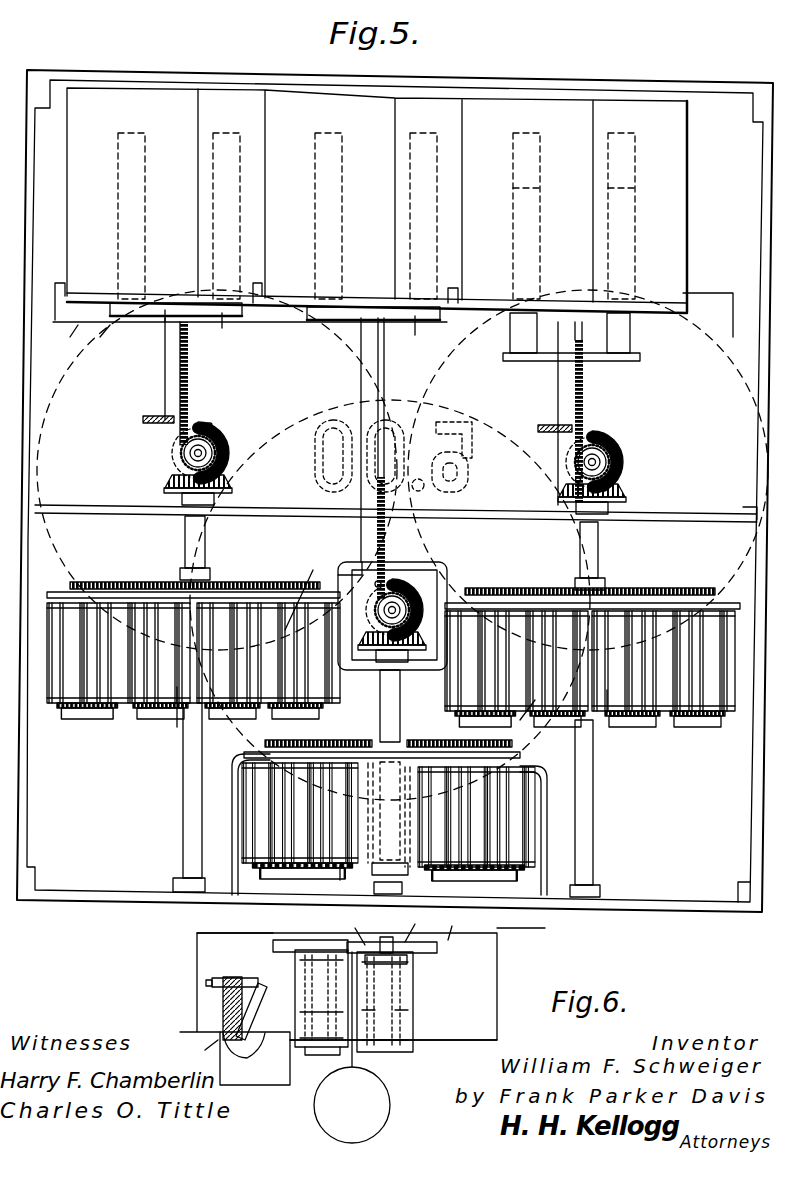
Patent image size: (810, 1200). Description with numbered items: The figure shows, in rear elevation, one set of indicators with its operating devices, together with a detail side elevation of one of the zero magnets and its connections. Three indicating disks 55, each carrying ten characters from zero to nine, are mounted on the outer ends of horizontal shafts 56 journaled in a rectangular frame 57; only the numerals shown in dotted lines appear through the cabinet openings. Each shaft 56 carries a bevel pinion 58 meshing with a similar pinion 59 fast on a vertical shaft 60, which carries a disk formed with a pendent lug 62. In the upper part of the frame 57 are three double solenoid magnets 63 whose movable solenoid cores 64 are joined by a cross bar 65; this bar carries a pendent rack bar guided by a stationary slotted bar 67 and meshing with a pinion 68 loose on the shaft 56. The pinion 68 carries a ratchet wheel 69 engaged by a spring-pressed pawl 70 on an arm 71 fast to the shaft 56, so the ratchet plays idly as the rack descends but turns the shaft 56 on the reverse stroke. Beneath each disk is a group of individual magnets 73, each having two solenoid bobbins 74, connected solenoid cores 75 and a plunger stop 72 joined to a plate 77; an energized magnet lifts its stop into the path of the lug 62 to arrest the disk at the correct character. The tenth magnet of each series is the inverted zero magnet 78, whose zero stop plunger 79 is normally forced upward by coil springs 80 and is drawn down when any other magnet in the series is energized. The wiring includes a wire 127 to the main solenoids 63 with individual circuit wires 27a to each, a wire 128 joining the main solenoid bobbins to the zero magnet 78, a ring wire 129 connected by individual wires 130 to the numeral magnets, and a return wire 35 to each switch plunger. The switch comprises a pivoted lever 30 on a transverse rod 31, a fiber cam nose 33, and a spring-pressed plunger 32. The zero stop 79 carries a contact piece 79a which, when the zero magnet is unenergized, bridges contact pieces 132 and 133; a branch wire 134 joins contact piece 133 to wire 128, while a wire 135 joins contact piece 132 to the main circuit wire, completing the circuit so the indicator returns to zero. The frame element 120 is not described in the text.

In FIG. 5, the individual circuit wire 27a is at (62, 292).
In FIG. 5, the indicating disk 55 is at (322, 407).
In FIG. 5, the horizontal shaft 56 is at (195, 458).
In FIG. 5, the rectangular frame 57 is at (767, 179).
In FIG. 5, the bevel pinion 58 is at (226, 450).
In FIG. 5, the bevel pinion 59 is at (230, 487).
In FIG. 5, the vertical shaft 60 is at (165, 352).
In FIG. 5, the pendent lug 62 is at (293, 583).
In FIG. 5, the double solenoid magnet 63 is at (377, 200).
In FIG. 5, the movable solenoid core 64 is at (213, 197).
In FIG. 5, the cross bar 65 is at (650, 358).
In FIG. 5, the stationary slotted bar 67 is at (143, 421).
In FIG. 5, the pinion 68 is at (190, 453).
In FIG. 5, the ratchet wheel 69 is at (225, 462).
In FIG. 5, the spring-pressed pawl 70 is at (207, 422).
In FIG. 5, the arm 71 is at (224, 438).
In FIG. 5, the plunger stop 72 is at (512, 602).
In FIG. 6, the plunger stop 72 is at (322, 945).
In FIG. 5, the individual magnet 73 is at (125, 622).
In FIG. 6, the individual magnet 73 is at (305, 950).
In FIG. 5, the solenoid bobbin 74 is at (177, 727).
In FIG. 5, the solenoid core 75 is at (108, 718).
In FIG. 6, the solenoid core 75 is at (330, 1012).
In FIG. 5, the plate 77 is at (158, 719).
In FIG. 5, the zero stop plunger 79 is at (408, 657).
In FIG. 6, the zero stop plunger 79 is at (385, 937).
In FIG. 6, the contact piece 79a is at (405, 960).
In FIG. 6, the zero magnet 78 is at (413, 995).
In FIG. 6, the coil spring 80 is at (405, 1028).
In FIG. 5, the wire 127 is at (77, 334).
In FIG. 5, the wire 128 is at (712, 292).
In FIG. 6, the wire 128 is at (448, 1042).
In FIG. 6, the pivoted lever 30 is at (237, 1055).
In FIG. 6, the transverse rod 31 is at (200, 1050).
In FIG. 6, the spring-pressed plunger 32 is at (250, 972).
In FIG. 6, the fiber cam nose 33 is at (272, 1048).
In FIG. 6, the individual wire 35 is at (270, 1085).
In FIG. 6, the frame 120 is at (545, 930).
In FIG. 6, the ring wire 129 is at (392, 1112).
In FIG. 6, the individual wire 130 is at (348, 1060).
In FIG. 6, the contact piece 132 is at (351, 927).
In FIG. 6, the contact piece 133 is at (421, 924).
In FIG. 6, the branch wire 134 is at (458, 924).
In FIG. 6, the wire 135 is at (218, 932).